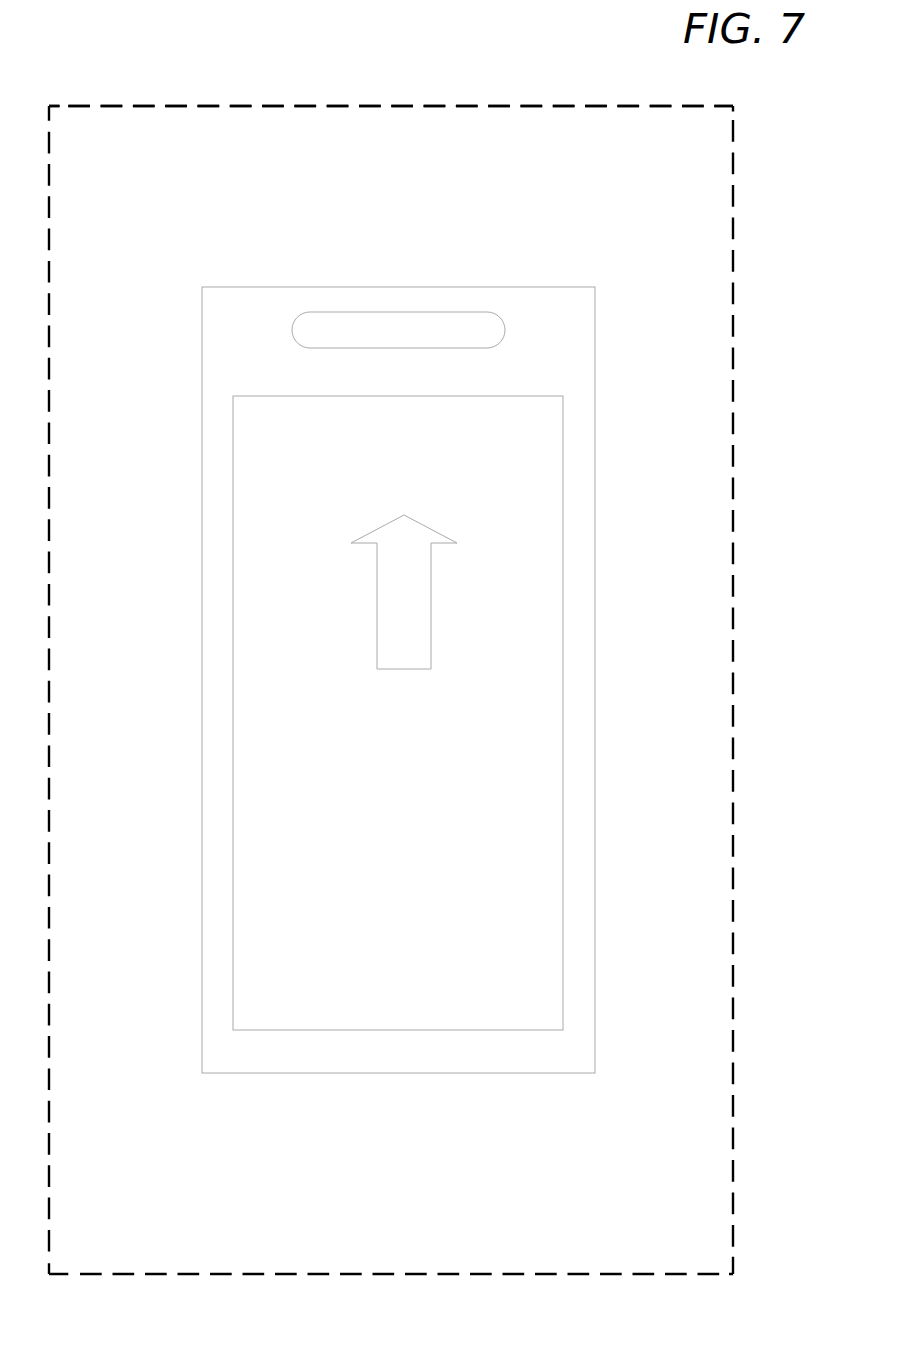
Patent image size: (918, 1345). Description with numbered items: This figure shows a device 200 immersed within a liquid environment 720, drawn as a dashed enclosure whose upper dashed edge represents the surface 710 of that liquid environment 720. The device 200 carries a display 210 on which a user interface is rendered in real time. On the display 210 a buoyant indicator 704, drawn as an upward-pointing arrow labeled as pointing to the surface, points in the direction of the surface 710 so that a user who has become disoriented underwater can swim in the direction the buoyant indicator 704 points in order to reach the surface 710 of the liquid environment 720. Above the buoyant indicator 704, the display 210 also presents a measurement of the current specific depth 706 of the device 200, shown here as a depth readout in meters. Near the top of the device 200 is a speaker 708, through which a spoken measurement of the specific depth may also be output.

The device 200 is at (563, 287).
The display 210 is at (488, 394).
The buoyant indicator 704 is at (459, 603).
The current specific depth 706 is at (516, 410).
The speaker 708 is at (462, 342).
The surface 710 is at (452, 96).
The liquid environment 720 is at (409, 166).